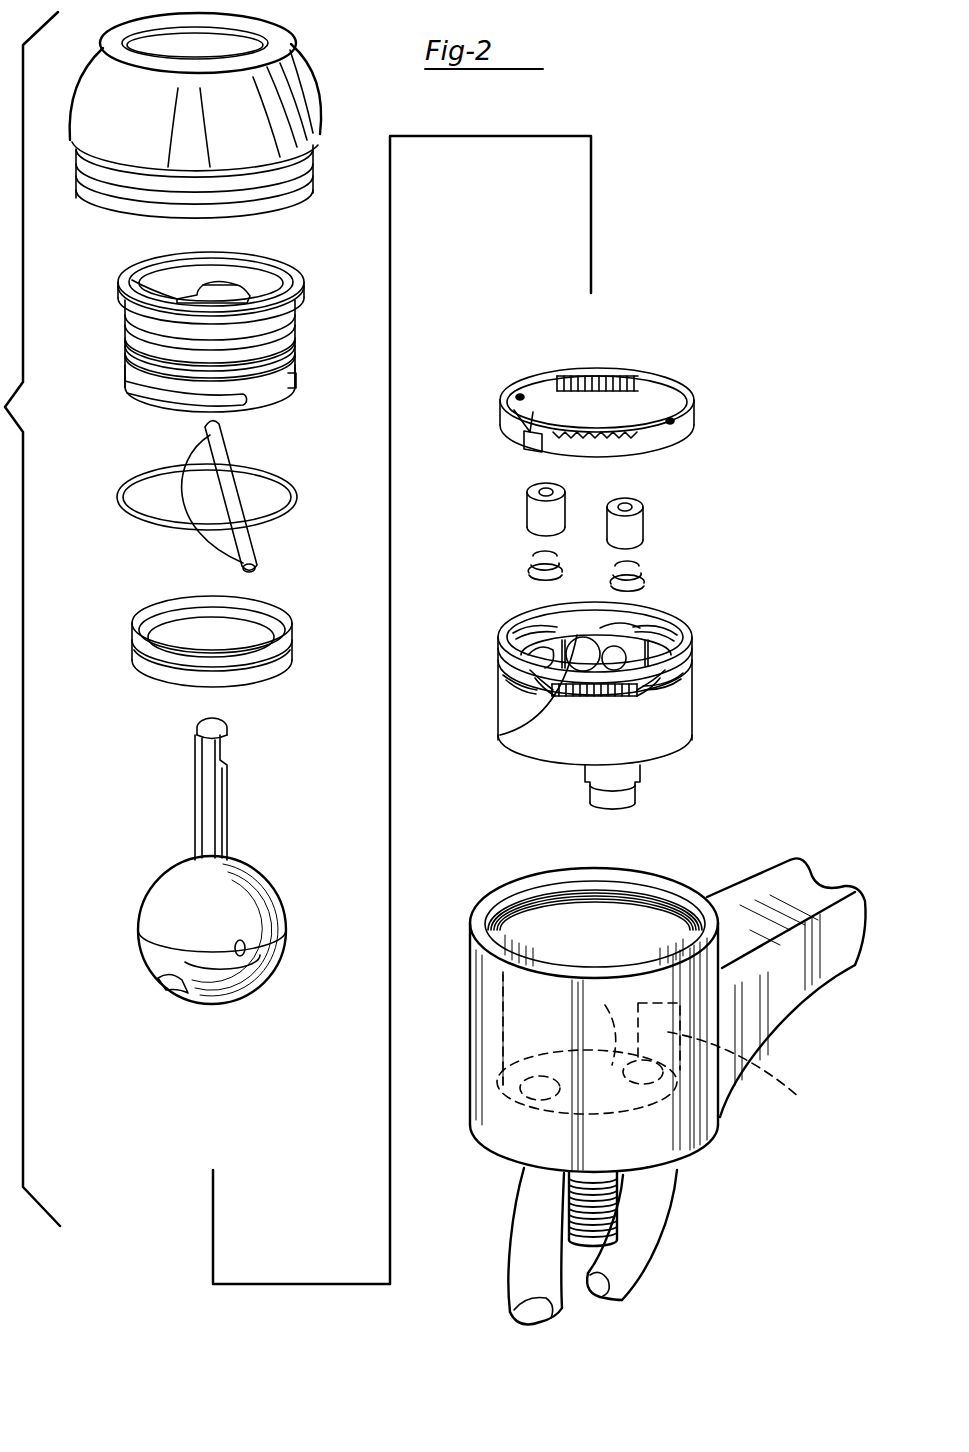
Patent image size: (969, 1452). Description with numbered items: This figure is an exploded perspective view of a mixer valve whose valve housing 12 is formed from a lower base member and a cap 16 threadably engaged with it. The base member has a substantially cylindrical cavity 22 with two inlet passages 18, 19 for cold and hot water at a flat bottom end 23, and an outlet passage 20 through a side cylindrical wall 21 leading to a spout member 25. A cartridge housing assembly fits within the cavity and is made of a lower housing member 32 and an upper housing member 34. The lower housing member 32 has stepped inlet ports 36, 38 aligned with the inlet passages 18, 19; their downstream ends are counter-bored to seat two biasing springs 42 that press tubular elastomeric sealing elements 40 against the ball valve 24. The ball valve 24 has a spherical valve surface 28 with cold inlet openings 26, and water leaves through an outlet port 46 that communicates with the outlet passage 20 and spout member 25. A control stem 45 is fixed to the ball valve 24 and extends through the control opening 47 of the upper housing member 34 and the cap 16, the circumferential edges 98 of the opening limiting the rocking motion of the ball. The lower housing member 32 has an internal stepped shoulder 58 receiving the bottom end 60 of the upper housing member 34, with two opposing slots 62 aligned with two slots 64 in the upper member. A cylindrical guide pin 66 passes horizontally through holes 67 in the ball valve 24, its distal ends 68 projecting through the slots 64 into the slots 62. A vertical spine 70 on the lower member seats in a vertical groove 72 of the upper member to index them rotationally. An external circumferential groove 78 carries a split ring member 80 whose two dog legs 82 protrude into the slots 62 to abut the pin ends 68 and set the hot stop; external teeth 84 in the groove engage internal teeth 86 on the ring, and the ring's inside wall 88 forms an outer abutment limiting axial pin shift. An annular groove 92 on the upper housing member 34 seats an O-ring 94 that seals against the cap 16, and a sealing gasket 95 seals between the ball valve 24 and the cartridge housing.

The valve housing 12 is at (638, 1050).
The cap 16 is at (303, 102).
The inlet passage 18 is at (528, 1218).
The inlet passage 19 is at (650, 1225).
The outlet passage 20 is at (665, 1083).
The side cylindrical wall 21 is at (503, 1087).
The cylindrical cavity 22 is at (613, 950).
The flat bottom end 23 is at (773, 1217).
The ball valve 24 is at (212, 891).
The spout member 25 is at (797, 893).
The cold inlet openings 26 is at (160, 983).
The spherical valve surface 28 is at (167, 920).
The lower housing member 32 is at (634, 682).
The upper housing member 34 is at (280, 345).
The inlet port 36 is at (628, 780).
The inlet port 38 is at (653, 647).
The tubular elastomeric sealing elements 40 is at (633, 498).
The biasing springs 42 is at (610, 573).
The control stem 45 is at (202, 783).
The outlet port 46 is at (523, 645).
The control opening 47 is at (235, 290).
The internal stepped shoulder 58 is at (613, 630).
The bottom end 60 is at (270, 397).
The slots 62 is at (687, 667).
The slots 64 is at (283, 360).
The guide pin 66 is at (233, 490).
The holes 67 is at (248, 945).
The distal ends 68 is at (198, 499).
The vertical spine 70 is at (500, 735).
The vertical groove 72 is at (292, 383).
The external circumferential groove 78 is at (605, 702).
The split ring member 80 is at (615, 389).
The dog legs 82 is at (520, 395).
The external teeth 84 is at (602, 698).
The internal teeth 86 is at (603, 380).
The inside wall 88 is at (535, 408).
The annular groove 92 is at (135, 355).
The O-ring 94 is at (153, 527).
The sealing gasket 95 is at (267, 668).
The circumferential edges 98 is at (178, 299).